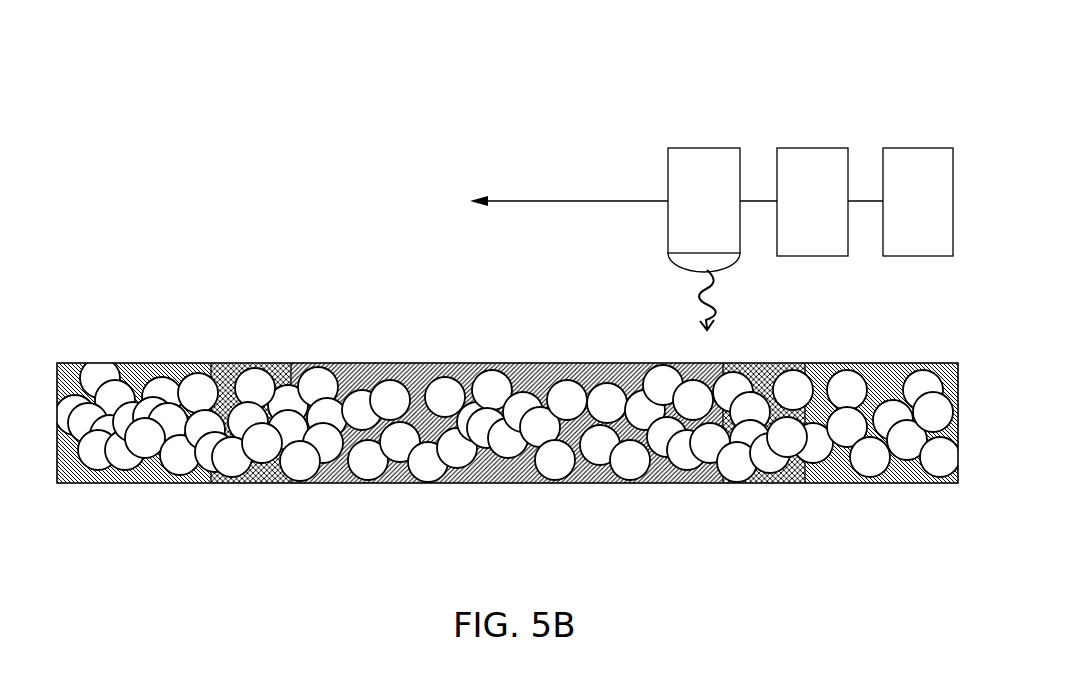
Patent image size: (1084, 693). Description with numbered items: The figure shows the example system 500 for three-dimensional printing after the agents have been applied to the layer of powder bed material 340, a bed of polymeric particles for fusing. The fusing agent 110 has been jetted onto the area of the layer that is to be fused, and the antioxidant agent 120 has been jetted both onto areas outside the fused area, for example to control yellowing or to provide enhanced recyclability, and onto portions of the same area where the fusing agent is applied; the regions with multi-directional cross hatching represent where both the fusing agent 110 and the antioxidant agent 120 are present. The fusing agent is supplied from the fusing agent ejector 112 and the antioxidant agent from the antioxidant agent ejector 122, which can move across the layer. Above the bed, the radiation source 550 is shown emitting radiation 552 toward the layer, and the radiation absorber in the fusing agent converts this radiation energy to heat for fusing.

The system 500 is at (160, 107).
The layer of powder bed material 340 is at (501, 382).
The fusing agent 110 is at (177, 372).
The antioxidant agent 120 is at (277, 372).
The radiation source 550 is at (725, 213).
The antioxidant agent ejector 122 is at (833, 213).
The fusing agent ejector 112 is at (939, 213).
The radiation 552 is at (700, 313).